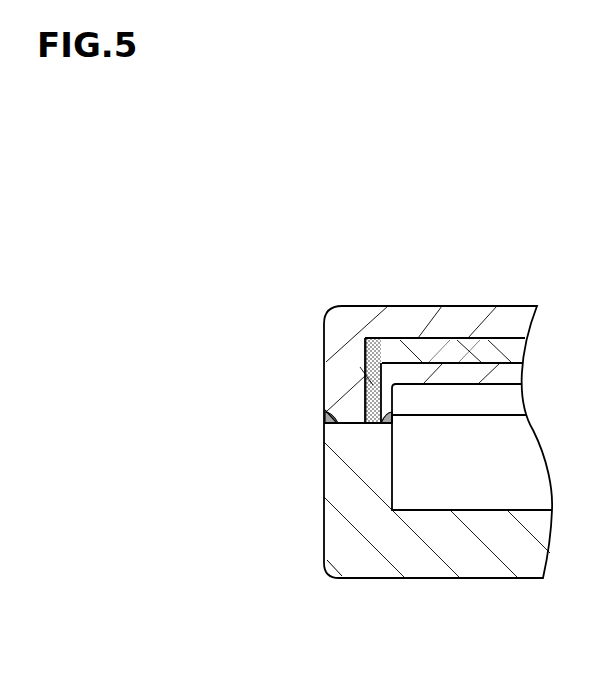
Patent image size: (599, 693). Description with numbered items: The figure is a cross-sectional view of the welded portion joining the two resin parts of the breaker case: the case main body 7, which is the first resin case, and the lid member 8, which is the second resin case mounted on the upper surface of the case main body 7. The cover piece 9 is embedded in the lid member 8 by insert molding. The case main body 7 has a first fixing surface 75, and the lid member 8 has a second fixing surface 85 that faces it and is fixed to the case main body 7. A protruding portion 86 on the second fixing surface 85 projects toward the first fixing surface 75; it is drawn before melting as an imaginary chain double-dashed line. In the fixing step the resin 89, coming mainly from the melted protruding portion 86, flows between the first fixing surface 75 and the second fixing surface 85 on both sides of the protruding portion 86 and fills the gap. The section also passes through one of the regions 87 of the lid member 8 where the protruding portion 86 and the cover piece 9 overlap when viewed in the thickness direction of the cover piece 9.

The case main body 7 is at (507, 533).
The lid member 8 is at (488, 320).
The cover piece 9 is at (420, 353).
The first fixing surface 75 is at (346, 377).
The second fixing surface 85 is at (428, 417).
The protruding portion 86 is at (318, 446).
The regions 87 is at (353, 423).
The resin 89 is at (327, 412).